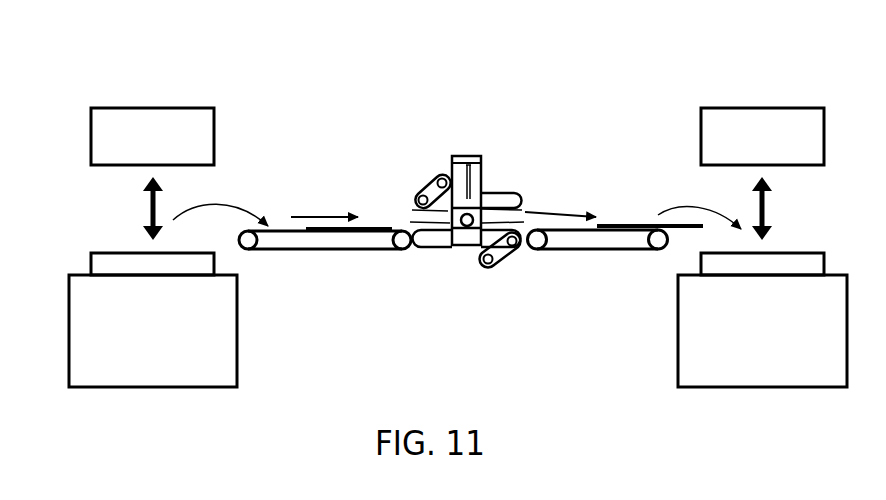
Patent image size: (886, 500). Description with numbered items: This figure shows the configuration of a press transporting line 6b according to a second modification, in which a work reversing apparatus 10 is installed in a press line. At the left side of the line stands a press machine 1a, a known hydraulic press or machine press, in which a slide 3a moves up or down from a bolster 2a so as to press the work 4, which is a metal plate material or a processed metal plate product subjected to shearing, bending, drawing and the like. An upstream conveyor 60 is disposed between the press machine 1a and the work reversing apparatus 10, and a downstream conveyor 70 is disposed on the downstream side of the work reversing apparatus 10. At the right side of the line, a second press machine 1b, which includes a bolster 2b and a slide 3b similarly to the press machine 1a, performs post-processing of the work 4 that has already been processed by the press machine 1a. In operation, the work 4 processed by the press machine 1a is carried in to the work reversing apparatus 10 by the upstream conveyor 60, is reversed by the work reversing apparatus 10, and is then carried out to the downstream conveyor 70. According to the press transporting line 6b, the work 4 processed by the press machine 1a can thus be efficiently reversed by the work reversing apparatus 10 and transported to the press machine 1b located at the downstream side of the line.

The press machine 1a is at (129, 220).
The press machine 1b is at (727, 222).
The bolster 2a is at (91, 264).
The bolster 2b is at (701, 265).
The slide 3a is at (91, 136).
The slide 3b is at (701, 136).
The work 4 is at (377, 227).
The press transporting line 6b is at (298, 80).
The work reversing apparatus 10 is at (464, 150).
The upstream conveyor 60 is at (350, 251).
The downstream conveyor 70 is at (574, 253).